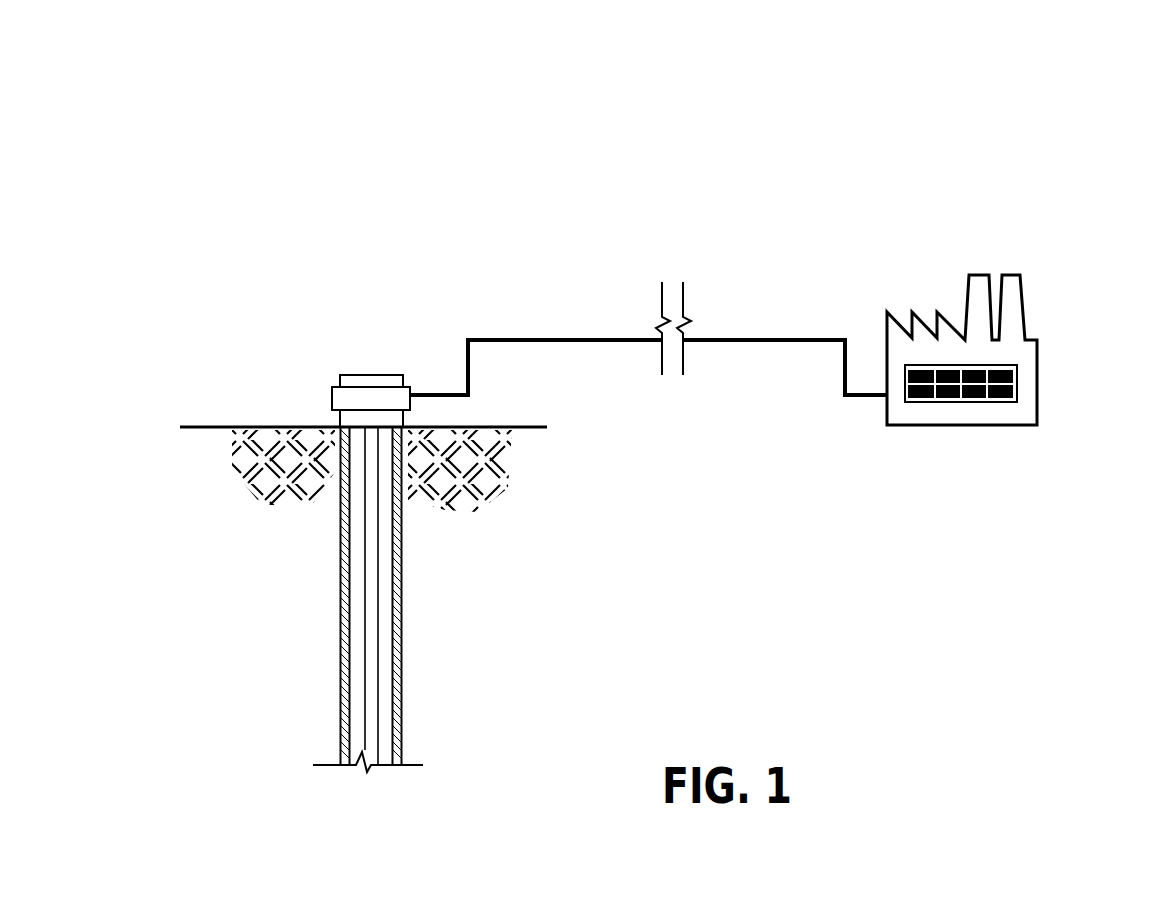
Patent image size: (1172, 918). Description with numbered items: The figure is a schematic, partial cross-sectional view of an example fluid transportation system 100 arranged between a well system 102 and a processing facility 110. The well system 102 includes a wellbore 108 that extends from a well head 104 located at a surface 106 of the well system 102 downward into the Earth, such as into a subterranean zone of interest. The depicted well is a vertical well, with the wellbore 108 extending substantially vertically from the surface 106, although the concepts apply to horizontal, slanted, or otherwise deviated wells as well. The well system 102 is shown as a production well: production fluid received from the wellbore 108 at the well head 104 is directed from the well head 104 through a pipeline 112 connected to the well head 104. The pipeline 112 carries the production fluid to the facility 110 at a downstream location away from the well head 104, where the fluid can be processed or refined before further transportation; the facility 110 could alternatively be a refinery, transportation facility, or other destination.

The fluid transportation system 100 is at (637, 104).
The well system 102 is at (284, 276).
The well head 104 is at (373, 374).
The surface 106 is at (270, 426).
The wellbore 108 is at (412, 607).
The processing facility 110 is at (1038, 405).
The pipeline 112 is at (583, 339).